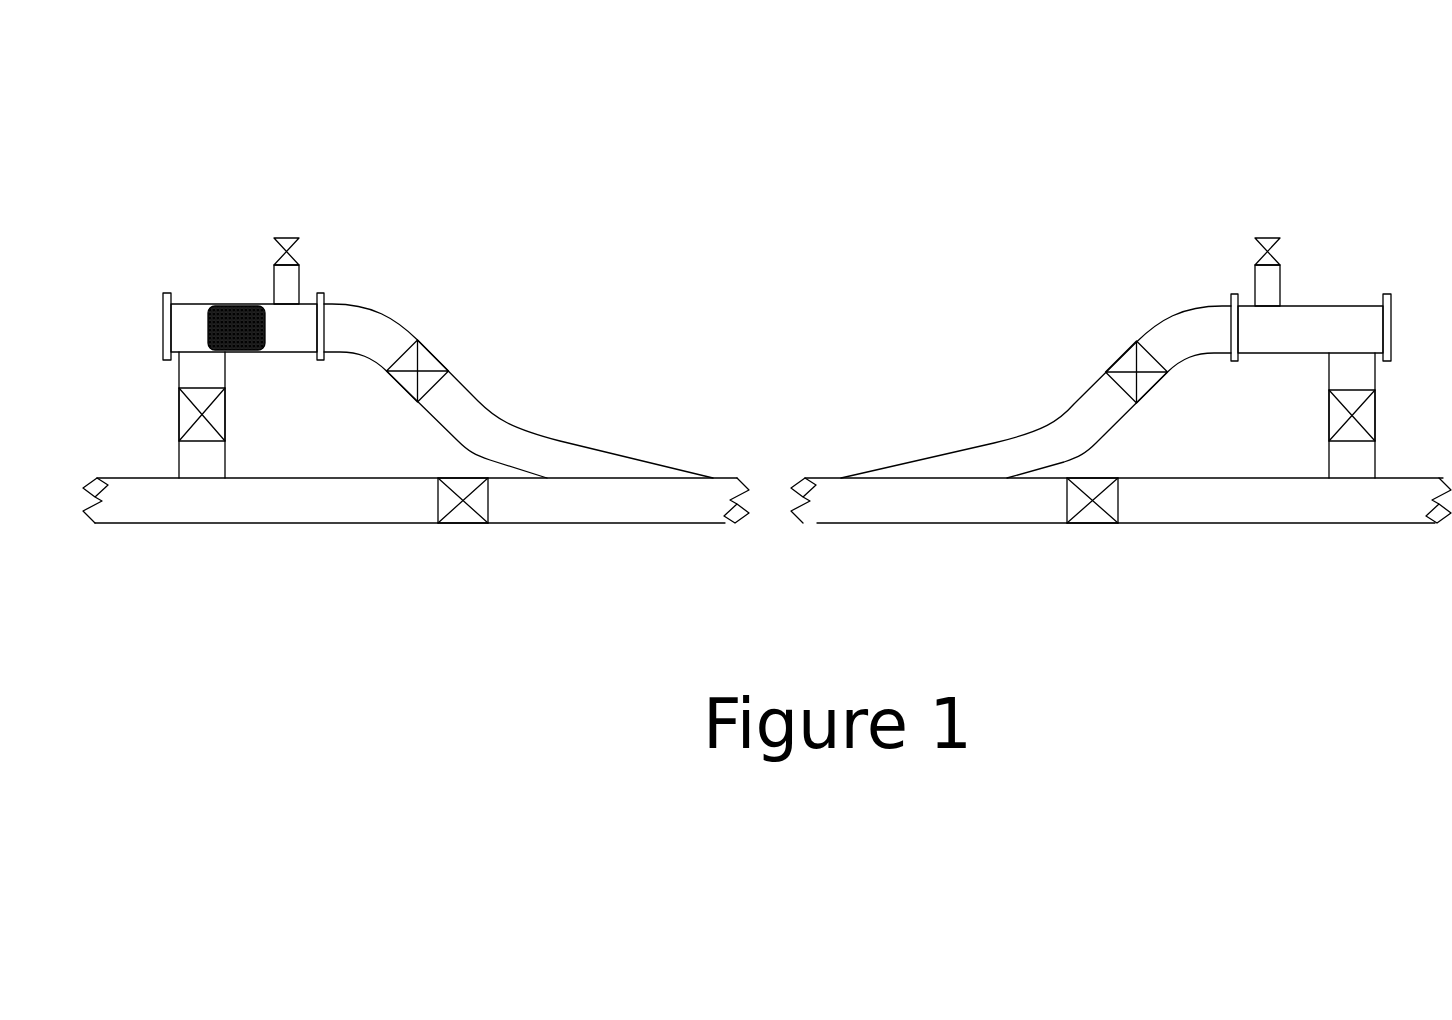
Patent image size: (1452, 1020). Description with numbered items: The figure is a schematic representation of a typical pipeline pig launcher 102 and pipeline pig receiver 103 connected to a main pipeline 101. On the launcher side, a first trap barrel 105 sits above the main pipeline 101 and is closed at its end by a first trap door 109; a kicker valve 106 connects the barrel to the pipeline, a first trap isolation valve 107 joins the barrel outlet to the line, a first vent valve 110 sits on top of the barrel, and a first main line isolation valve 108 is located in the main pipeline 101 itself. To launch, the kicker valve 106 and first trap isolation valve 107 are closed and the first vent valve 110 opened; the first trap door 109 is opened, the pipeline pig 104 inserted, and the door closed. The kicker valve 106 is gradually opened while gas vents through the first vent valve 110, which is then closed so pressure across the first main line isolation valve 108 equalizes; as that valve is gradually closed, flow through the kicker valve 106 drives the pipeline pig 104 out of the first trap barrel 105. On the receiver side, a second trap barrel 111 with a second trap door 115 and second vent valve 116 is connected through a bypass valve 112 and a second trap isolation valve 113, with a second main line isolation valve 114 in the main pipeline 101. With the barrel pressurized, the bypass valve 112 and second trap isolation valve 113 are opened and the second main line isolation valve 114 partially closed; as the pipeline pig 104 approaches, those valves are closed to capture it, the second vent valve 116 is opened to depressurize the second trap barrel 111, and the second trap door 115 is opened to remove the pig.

The main pipeline 101 is at (222, 545).
The pipeline pig launcher 102 is at (490, 272).
The pipeline pig receiver 103 is at (1098, 273).
The pipeline pig 104 is at (236, 328).
The first trap barrel 105 is at (184, 314).
The kicker valve 106 is at (240, 415).
The first trap isolation valve 107 is at (452, 345).
The first main line isolation valve 108 is at (452, 541).
The first trap door 109 is at (149, 315).
The first vent valve 110 is at (318, 229).
The second trap barrel 111 is at (1336, 324).
The bypass valve 112 is at (1320, 428).
The second trap isolation valve 113 is at (1103, 341).
The second main line isolation valve 114 is at (1105, 541).
The second trap door 115 is at (1408, 322).
The second vent valve 116 is at (1242, 233).